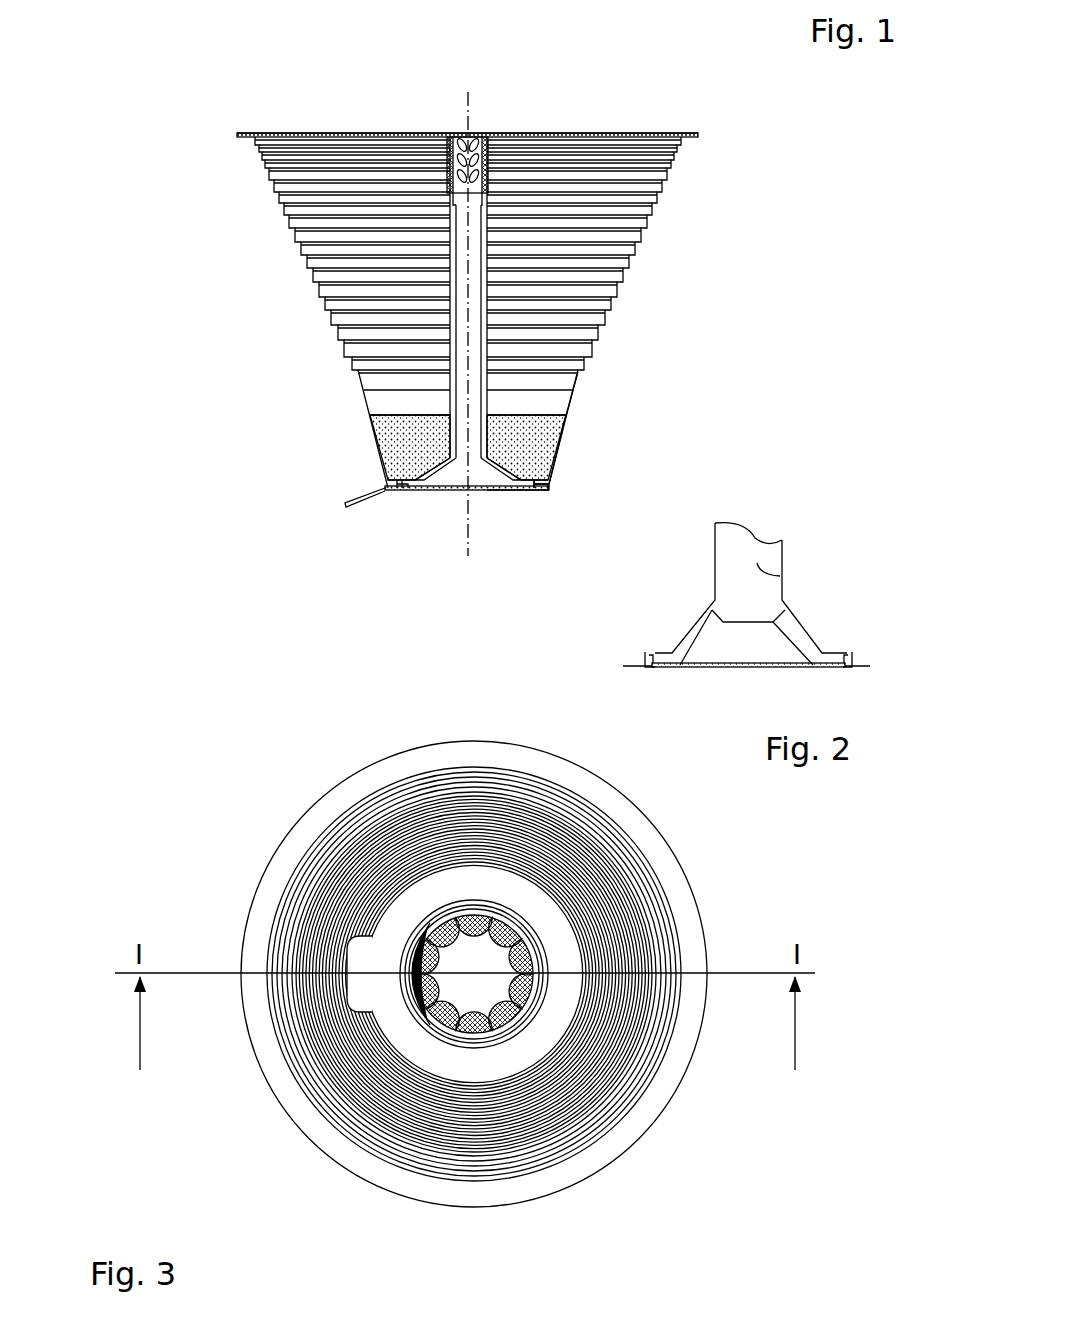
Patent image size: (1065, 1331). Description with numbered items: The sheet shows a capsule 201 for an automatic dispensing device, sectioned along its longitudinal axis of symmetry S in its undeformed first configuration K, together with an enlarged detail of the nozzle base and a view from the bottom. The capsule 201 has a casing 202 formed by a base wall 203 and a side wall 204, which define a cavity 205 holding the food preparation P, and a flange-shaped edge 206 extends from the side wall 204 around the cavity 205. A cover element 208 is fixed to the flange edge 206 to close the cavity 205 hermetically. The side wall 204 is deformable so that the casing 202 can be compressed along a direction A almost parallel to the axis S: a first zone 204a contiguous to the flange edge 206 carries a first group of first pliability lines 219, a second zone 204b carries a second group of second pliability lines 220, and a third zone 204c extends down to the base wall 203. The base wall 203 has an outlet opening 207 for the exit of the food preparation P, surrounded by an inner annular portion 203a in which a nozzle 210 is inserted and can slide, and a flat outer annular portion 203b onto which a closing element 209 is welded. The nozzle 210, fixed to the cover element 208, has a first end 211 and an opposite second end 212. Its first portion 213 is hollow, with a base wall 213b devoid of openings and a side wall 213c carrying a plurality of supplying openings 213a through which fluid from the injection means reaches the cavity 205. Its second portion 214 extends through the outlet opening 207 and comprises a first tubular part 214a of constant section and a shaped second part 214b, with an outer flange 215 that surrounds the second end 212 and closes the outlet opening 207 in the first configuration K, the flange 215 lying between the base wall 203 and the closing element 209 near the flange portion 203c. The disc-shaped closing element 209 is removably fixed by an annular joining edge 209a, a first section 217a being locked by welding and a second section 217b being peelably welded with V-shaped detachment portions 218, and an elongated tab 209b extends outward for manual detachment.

In FIG. 1, the capsule 201 is at (278, 100).
In FIG. 3, the capsule 201 is at (320, 770).
In FIG. 1, the casing 202 is at (715, 268).
In FIG. 1, the base wall 203 is at (552, 500).
In FIG. 1, the inner annular portion 203a is at (532, 458).
In FIG. 1, the outer annular portion 203b is at (550, 491).
In FIG. 2, the bottom flange portion 203c is at (840, 655).
In FIG. 1, the side wall 204 is at (648, 231).
In FIG. 1, the first zone 204a is at (680, 155).
In FIG. 1, the second zone 204b is at (625, 272).
In FIG. 1, the third zone 204c is at (573, 432).
In FIG. 1, the cavity 205 is at (522, 393).
In FIG. 1, the flange-shaped edge 206 is at (255, 140).
In FIG. 3, the flange-shaped edge 206 is at (272, 858).
In FIG. 1, the outlet opening 207 is at (404, 470).
In FIG. 1, the cover element 208 is at (690, 134).
In FIG. 1, the closing element 209 is at (495, 510).
In FIG. 3, the closing element 209 is at (500, 1003).
In FIG. 1, the joining edge 209a is at (546, 503).
In FIG. 1, the elongated tab 209b is at (355, 500).
In FIG. 3, the elongated tab 209b is at (250, 1003).
In FIG. 1, the nozzle 210 is at (436, 293).
In FIG. 1, the first end 211 is at (468, 132).
In FIG. 1, the second end 212 is at (432, 498).
In FIG. 2, the second end 212 is at (700, 670).
In FIG. 1, the first portion 213 is at (538, 117).
In FIG. 1, the supplying openings 213a is at (485, 140).
In FIG. 1, the base wall 213b is at (455, 208).
In FIG. 1, the side wall 213c is at (463, 130).
In FIG. 1, the second portion 214 is at (446, 360).
In FIG. 2, the second portion 214 is at (712, 582).
In FIG. 1, the first tubular part 214a is at (452, 322).
In FIG. 2, the first tubular part 214a is at (775, 560).
In FIG. 1, the shaped second part 214b is at (412, 472).
In FIG. 2, the shaped second part 214b is at (790, 632).
In FIG. 1, the outer flange 215 is at (400, 497).
In FIG. 2, the outer flange 215 is at (655, 667).
In FIG. 3, the first section 217a is at (445, 972).
In FIG. 3, the second section 217b is at (487, 935).
In FIG. 3, the detachment portion 218 is at (530, 960).
In FIG. 1, the first pliability lines 219 is at (360, 157).
In FIG. 3, the first pliability lines 219 is at (300, 930).
In FIG. 1, the second pliability lines 220 is at (372, 195).
In FIG. 3, the second pliability lines 220 is at (372, 986).
In FIG. 1, the direction A is at (858, 222).
In FIG. 1, the first configuration K is at (212, 443).
In FIG. 1, the food preparation P is at (545, 422).
In FIG. 1, the longitudinal axis of symmetry S is at (468, 340).